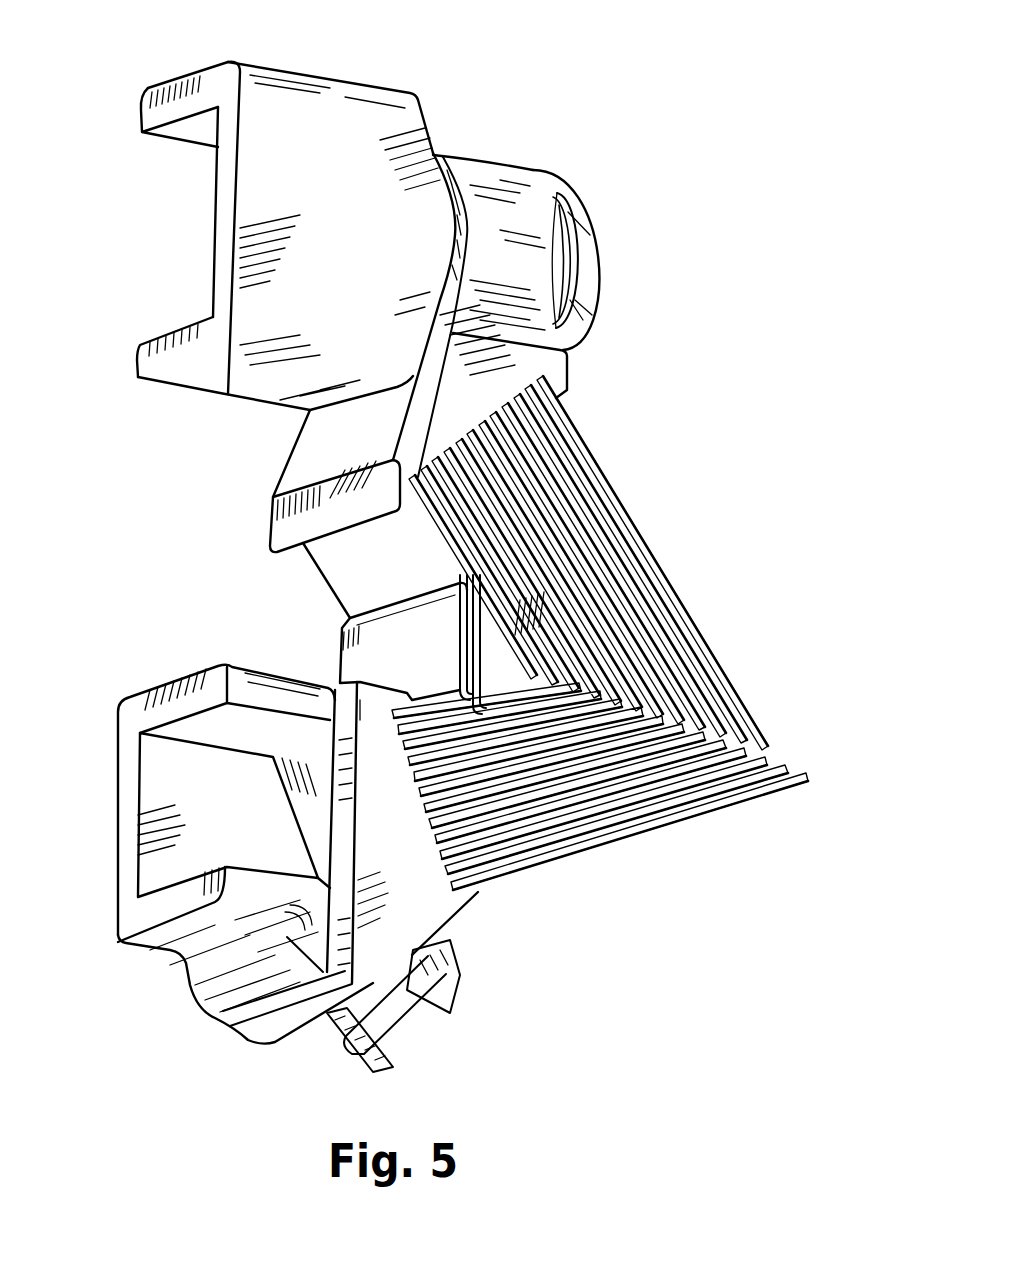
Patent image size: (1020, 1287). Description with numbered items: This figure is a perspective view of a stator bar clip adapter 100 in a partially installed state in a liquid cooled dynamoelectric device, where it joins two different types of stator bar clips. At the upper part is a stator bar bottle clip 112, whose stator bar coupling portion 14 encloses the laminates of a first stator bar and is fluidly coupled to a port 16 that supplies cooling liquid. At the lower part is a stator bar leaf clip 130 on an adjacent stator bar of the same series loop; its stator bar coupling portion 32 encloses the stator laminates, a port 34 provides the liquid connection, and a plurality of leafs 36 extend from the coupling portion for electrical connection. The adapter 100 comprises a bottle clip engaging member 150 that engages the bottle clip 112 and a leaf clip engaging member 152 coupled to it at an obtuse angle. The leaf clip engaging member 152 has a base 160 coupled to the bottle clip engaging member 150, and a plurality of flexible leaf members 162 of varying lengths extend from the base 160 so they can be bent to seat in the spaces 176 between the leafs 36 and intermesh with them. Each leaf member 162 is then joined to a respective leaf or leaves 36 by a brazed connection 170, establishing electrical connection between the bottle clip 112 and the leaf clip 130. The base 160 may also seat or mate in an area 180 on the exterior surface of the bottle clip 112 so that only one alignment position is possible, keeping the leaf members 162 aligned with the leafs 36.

The stator bar coupling portion 14 is at (282, 108).
The port 16 is at (592, 237).
The stator bar coupling portion 32 is at (170, 852).
The port 34 is at (390, 1020).
The leafs 36 is at (690, 812).
The stator bar clip adapter 100 is at (522, 203).
The stator bar bottle clip 112 is at (360, 220).
The stator bar leaf clip 130 is at (360, 836).
The bottle clip engaging member 150 is at (487, 162).
The leaf clip engaging member 152 is at (562, 262).
The base 160 is at (348, 446).
The leaf members 162 is at (477, 620).
The brazed connection 170 is at (462, 612).
The spaces 176 is at (492, 668).
The area 180 is at (432, 333).